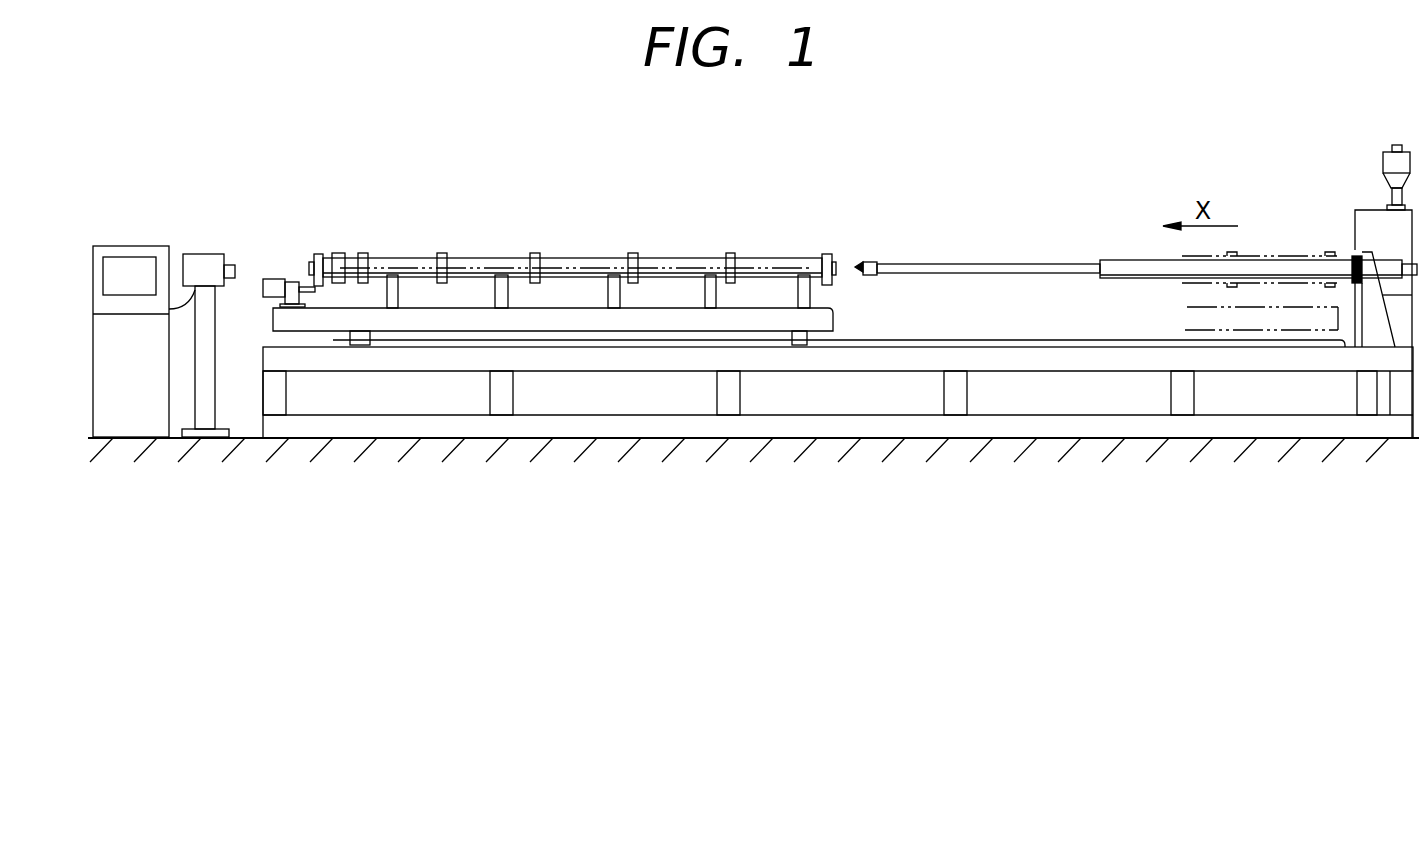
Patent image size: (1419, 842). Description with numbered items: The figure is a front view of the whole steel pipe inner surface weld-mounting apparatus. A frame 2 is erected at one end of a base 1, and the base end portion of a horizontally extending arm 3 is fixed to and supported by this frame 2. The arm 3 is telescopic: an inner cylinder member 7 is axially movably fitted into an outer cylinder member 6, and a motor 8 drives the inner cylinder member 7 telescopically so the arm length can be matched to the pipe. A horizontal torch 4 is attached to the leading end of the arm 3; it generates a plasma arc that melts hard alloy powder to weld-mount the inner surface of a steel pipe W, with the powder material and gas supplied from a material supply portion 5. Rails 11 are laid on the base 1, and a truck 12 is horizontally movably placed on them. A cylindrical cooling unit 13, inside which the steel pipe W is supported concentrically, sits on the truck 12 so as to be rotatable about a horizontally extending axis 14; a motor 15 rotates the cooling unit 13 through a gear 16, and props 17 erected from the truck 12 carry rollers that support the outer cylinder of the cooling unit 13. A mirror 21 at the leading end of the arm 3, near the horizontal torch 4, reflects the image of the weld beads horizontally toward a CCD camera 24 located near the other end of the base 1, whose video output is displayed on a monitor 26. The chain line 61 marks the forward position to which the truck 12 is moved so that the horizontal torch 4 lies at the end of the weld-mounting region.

The base 1 is at (790, 432).
The frame 2 is at (1358, 318).
The arm 3 is at (1113, 258).
The horizontal torch 4 is at (870, 278).
The material supply portion 5 is at (1383, 160).
The outer cylinder member 6 is at (1158, 278).
The inner cylinder member 7 is at (1005, 275).
The motor 8 is at (1387, 260).
The rails 11 is at (912, 340).
The truck 12 is at (471, 314).
The cooling unit 13 is at (574, 256).
The axis 14 is at (679, 268).
The motor 15 is at (277, 279).
The gear 16 is at (321, 256).
The props 17 is at (397, 290).
The mirror 21 is at (855, 265).
The CCD camera 24 is at (213, 254).
The monitor 26 is at (148, 245).
The chain line 61 is at (1257, 330).
The steel pipe W is at (836, 262).